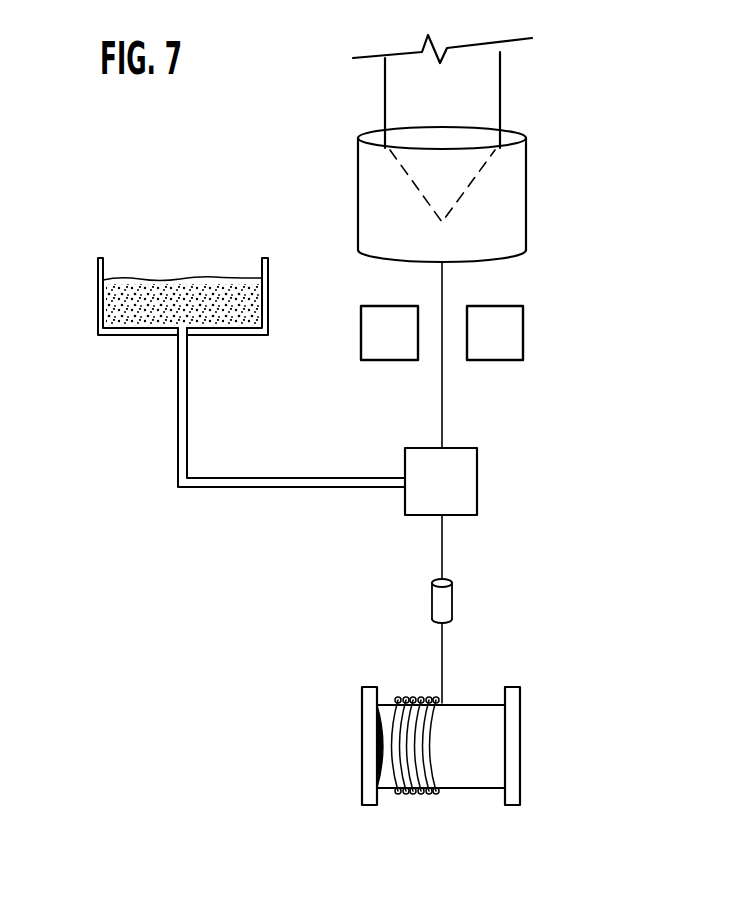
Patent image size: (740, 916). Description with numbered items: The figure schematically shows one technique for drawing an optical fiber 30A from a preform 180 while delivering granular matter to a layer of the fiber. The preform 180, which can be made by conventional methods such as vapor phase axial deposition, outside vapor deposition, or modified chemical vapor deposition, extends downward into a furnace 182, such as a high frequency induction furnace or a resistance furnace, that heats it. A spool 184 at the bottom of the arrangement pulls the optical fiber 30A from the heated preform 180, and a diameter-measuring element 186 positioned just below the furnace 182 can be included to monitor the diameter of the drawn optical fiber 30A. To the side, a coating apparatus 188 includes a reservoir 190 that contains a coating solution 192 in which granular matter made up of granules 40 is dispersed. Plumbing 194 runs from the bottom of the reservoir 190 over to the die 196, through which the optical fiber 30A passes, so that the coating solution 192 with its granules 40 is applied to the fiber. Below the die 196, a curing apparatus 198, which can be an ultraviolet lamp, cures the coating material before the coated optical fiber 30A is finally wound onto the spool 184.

The preform 180 is at (487, 97).
The furnace 182 is at (518, 198).
The optical fiber 30A is at (442, 413).
The diameter-measuring element 186 is at (523, 335).
The die 196 is at (477, 483).
The reservoir 190 is at (100, 302).
The coating solution 192 is at (130, 272).
The granules 40 is at (198, 280).
The plumbing 194 is at (200, 488).
The coating apparatus 188 is at (118, 494).
The curing apparatus 198 is at (452, 602).
The spool 184 is at (510, 748).